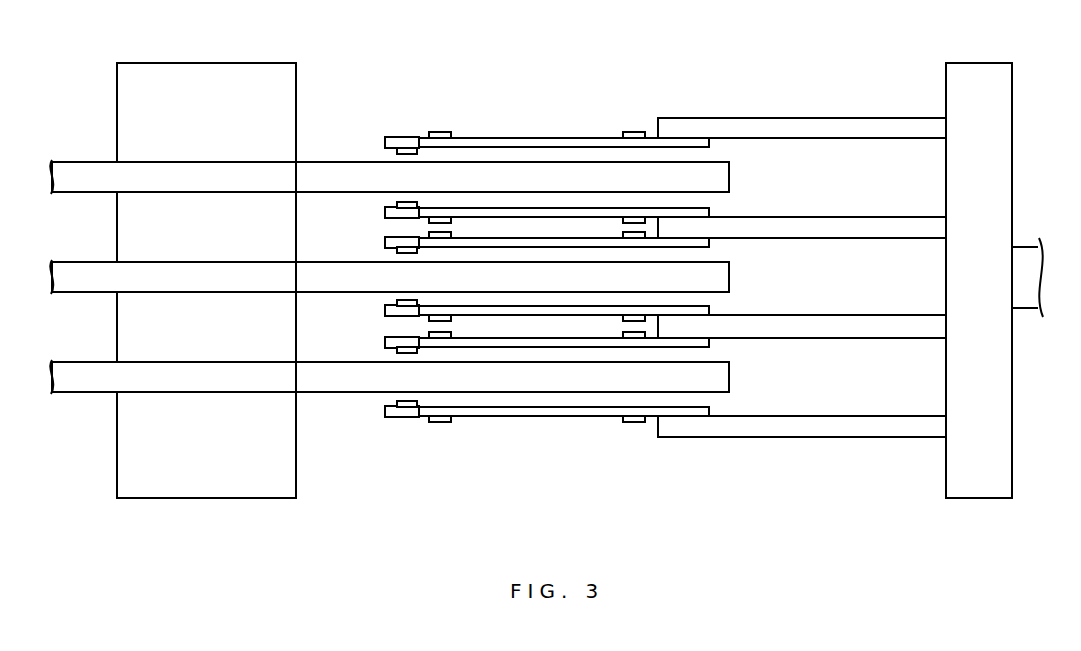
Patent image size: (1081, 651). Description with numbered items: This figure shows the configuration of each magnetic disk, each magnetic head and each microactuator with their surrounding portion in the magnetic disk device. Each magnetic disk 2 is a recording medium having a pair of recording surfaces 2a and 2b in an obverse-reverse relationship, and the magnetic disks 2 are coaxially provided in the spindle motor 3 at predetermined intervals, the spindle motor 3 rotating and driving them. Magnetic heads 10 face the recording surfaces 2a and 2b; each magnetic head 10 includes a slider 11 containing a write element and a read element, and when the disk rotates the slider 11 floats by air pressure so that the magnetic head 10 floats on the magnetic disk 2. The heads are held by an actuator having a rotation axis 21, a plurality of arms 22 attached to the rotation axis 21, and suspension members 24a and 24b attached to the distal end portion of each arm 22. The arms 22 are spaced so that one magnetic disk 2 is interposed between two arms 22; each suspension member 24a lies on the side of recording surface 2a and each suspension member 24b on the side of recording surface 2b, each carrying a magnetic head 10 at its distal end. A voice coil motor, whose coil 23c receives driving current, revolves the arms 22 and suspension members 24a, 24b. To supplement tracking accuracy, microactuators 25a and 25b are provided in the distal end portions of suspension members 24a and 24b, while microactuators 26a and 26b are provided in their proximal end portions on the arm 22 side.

The magnetic disk 2 is at (224, 162).
The recording surface 2a is at (313, 162).
The recording surface 2b is at (313, 193).
The spindle motor 3 is at (224, 63).
The magnetic head 10 is at (407, 137).
The slider 11 is at (397, 151).
The rotation axis 21 is at (979, 63).
The arm 22 is at (855, 118).
The coil 23c is at (1028, 246).
The suspension member 24a is at (527, 138).
The suspension member 24b is at (709, 212).
The microactuator 25a is at (441, 132).
The microactuator 25b is at (447, 216).
The microactuator 26a is at (637, 132).
The microactuator 26b is at (628, 217).